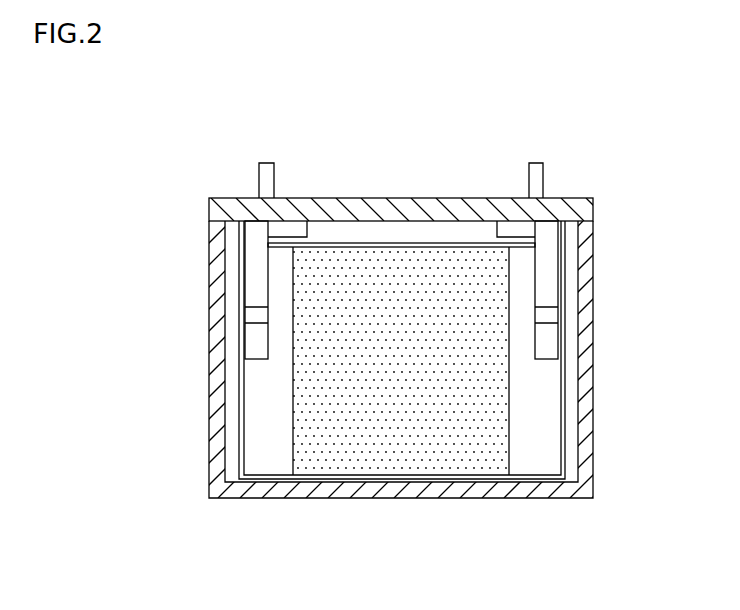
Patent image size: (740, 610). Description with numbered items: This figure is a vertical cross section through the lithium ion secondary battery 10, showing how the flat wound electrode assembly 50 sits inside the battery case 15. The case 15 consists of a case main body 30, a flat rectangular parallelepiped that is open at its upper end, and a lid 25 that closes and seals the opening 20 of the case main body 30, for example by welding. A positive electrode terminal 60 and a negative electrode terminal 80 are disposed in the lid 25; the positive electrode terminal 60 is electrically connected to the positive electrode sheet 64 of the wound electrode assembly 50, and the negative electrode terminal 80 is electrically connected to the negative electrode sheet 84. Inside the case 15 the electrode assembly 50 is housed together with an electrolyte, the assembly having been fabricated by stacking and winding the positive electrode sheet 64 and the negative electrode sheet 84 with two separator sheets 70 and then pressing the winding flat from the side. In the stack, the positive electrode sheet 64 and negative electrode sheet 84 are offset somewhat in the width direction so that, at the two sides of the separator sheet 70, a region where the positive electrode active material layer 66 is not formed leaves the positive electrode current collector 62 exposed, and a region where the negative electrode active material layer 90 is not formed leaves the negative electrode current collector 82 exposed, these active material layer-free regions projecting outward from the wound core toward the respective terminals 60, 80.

The lithium ion secondary battery 10 is at (638, 115).
The battery case 15 is at (667, 200).
The opening 20 is at (387, 238).
The lid 25 is at (594, 200).
The case main body 30 is at (594, 240).
The wound electrode assembly 50 is at (424, 240).
The positive electrode terminal 60 is at (267, 162).
The positive electrode current collector 62 is at (265, 462).
The positive electrode sheet 64 is at (256, 290).
The positive electrode active material layer 66 is at (352, 445).
The separator sheet 70 is at (414, 462).
The negative electrode terminal 80 is at (538, 162).
The negative electrode current collector 82 is at (533, 463).
The negative electrode sheet 84 is at (546, 290).
The negative electrode active material layer 90 is at (483, 448).